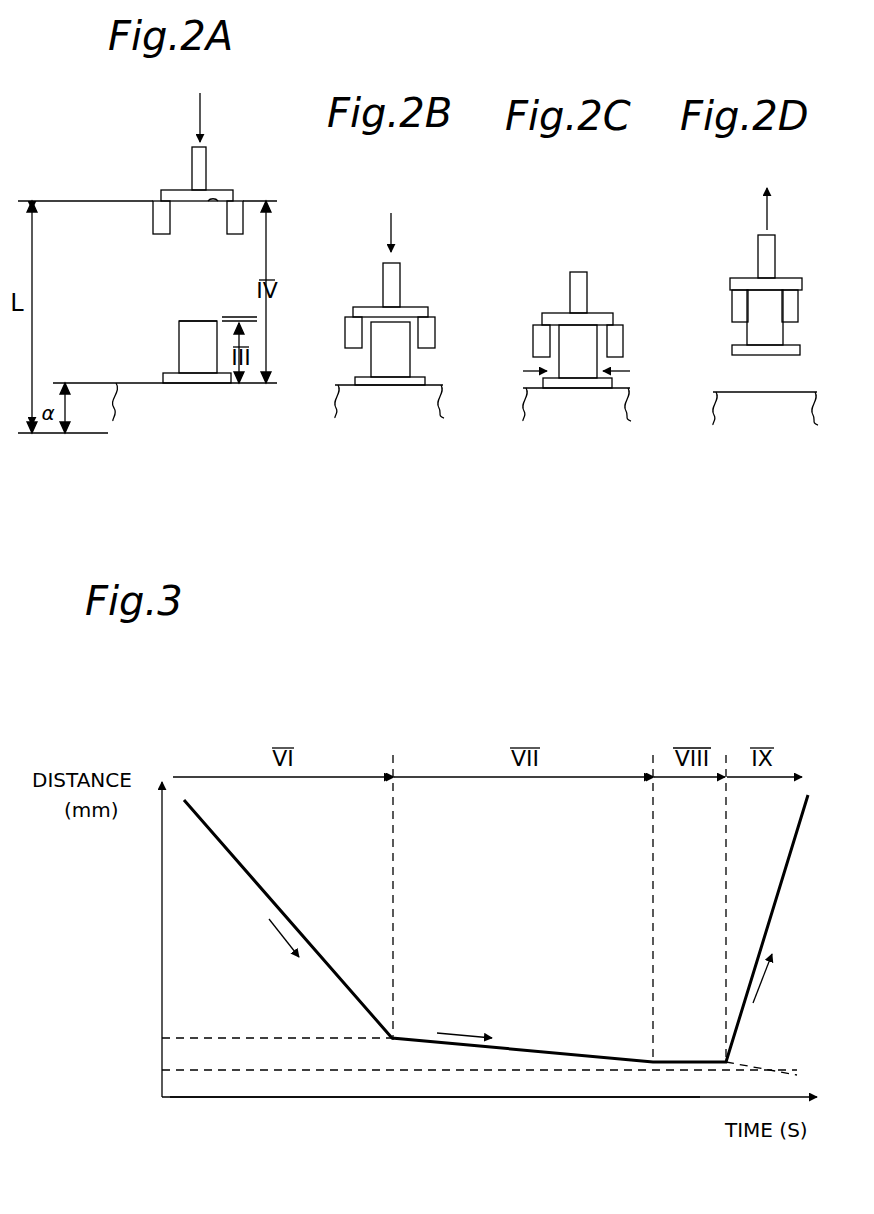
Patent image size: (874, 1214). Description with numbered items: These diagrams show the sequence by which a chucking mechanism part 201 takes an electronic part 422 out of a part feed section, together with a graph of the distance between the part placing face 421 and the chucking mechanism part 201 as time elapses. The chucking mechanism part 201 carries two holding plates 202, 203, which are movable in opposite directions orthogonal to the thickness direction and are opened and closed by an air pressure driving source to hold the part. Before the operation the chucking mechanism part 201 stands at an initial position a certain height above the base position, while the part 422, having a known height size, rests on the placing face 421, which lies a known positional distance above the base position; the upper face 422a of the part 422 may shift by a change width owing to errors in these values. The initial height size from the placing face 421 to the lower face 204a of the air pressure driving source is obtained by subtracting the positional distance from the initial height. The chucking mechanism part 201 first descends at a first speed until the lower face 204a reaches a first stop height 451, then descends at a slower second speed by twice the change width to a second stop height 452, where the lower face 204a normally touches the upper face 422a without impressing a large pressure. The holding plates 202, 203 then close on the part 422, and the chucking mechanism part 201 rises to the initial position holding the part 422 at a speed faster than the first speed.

In FIG. 2A, the chucking mechanism part 201 is at (157, 183).
In FIG. 2B, the chucking mechanism part 201 is at (353, 300).
In FIG. 2C, the chucking mechanism part 201 is at (541, 309).
In FIG. 2D, the chucking mechanism part 201 is at (729, 268).
In FIG. 2A, the holding plate 202 is at (152, 218).
In FIG. 2B, the holding plate 202 is at (347, 333).
In FIG. 2C, the holding plate 202 is at (533, 340).
In FIG. 2D, the holding plate 202 is at (732, 307).
In FIG. 2B, the holding plate 203 is at (437, 335).
In FIG. 2D, the holding plate 203 is at (800, 310).
In FIG. 2A, the lower face of air pressure driving source 204a is at (212, 208).
In FIG. 2A, the part placing face 421 is at (133, 382).
In FIG. 3, the part placing face 421 is at (225, 1097).
In FIG. 2A, the electronic part 422 is at (190, 350).
In FIG. 2B, the electronic part 422 is at (387, 358).
In FIG. 2C, the electronic part 422 is at (577, 370).
In FIG. 2D, the electronic part 422 is at (762, 330).
In FIG. 2A, the upper face of part 422a is at (200, 320).
In FIG. 2A, the first stop height 451 is at (235, 315).
In FIG. 3, the first stop height 451 is at (318, 1038).
In FIG. 3, the second stop height 452 is at (272, 1069).